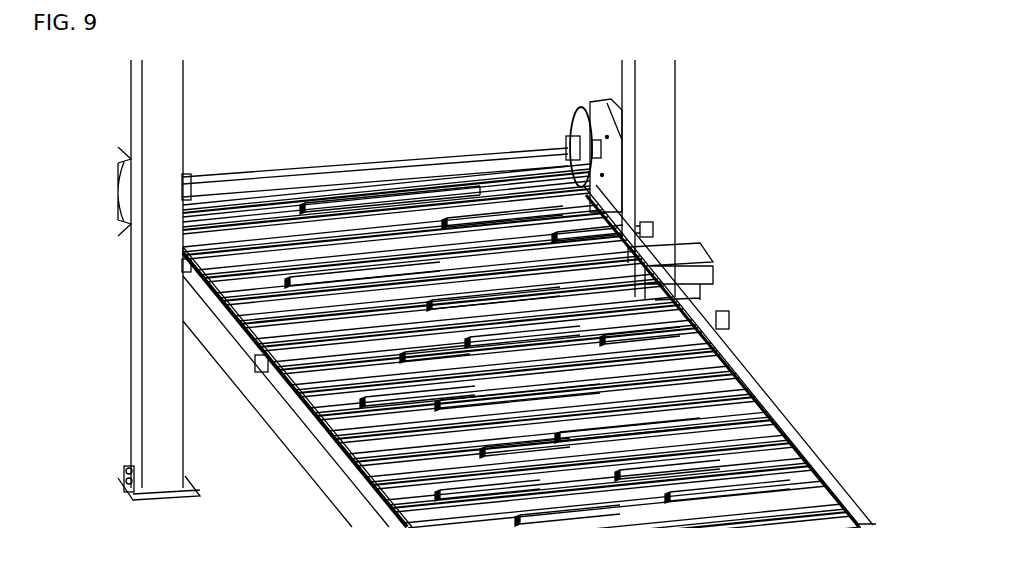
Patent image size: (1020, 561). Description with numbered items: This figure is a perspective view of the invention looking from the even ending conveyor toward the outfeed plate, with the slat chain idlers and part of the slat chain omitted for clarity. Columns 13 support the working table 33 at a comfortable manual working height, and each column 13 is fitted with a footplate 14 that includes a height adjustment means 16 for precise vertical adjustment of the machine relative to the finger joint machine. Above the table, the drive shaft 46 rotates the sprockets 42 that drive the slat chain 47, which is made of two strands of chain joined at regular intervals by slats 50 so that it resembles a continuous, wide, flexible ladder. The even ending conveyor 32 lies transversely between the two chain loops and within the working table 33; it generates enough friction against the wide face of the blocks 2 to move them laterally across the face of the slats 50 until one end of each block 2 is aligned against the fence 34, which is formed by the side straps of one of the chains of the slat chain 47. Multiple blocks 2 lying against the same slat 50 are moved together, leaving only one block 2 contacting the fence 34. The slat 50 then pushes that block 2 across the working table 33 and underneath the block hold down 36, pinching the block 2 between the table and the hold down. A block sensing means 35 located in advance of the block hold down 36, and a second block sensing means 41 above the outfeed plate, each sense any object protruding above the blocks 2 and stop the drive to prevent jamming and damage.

The block 2 is at (385, 203).
The column 13 is at (678, 147).
The footplate 14 is at (133, 506).
The height adjustment means 16 is at (121, 486).
The even ending conveyor 32 is at (549, 345).
The working table 33 is at (273, 430).
The fence 34 is at (780, 420).
The block sensing means 35 is at (733, 313).
The block hold down 36 is at (703, 256).
The block sensing means 41 is at (658, 219).
The sprocket 42 is at (570, 115).
The drive shaft 46 is at (492, 150).
The slat chain 47 is at (340, 468).
The slat 50 is at (275, 222).